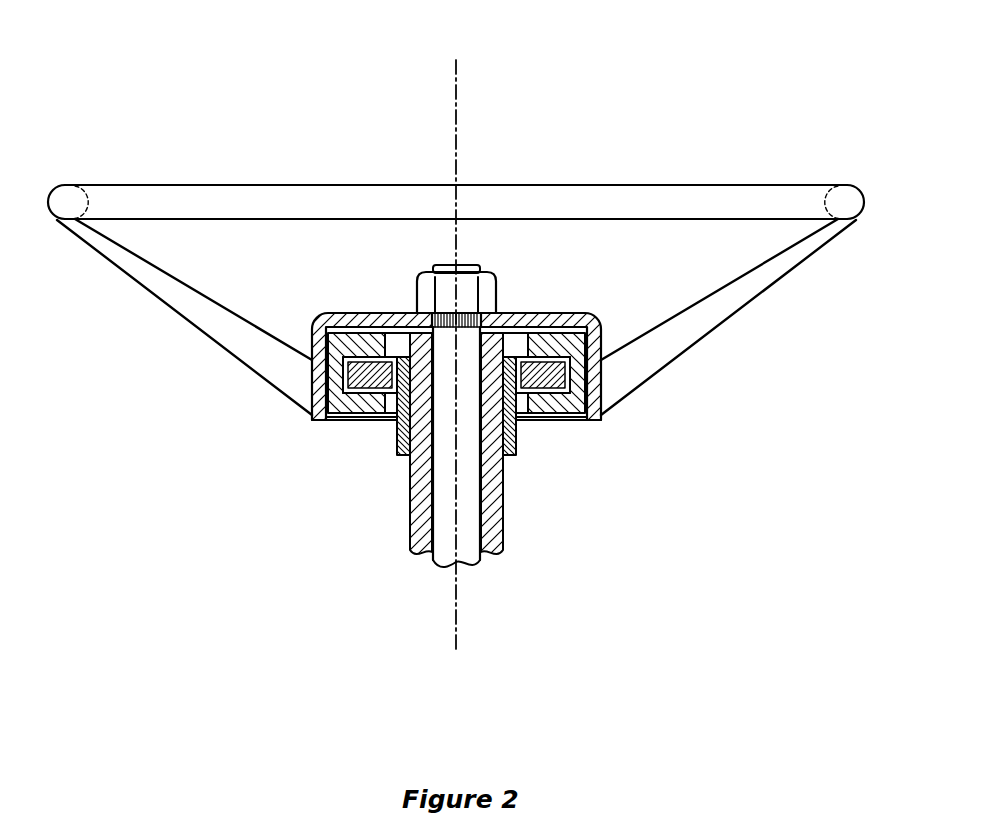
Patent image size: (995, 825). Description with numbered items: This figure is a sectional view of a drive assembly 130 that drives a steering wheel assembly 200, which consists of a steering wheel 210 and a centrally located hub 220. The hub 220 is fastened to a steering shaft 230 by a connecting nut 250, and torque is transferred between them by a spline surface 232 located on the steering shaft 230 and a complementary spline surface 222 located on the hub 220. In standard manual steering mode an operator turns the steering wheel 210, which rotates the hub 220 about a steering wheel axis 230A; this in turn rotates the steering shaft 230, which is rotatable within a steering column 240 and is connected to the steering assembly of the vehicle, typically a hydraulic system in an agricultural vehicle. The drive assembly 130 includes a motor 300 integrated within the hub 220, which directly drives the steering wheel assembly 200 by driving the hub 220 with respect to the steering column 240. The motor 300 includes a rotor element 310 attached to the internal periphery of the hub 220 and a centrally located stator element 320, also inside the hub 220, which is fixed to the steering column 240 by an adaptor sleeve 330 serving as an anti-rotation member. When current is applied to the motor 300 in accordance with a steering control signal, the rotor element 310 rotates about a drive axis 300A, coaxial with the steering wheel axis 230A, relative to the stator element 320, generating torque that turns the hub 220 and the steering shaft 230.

The steering wheel assembly 200 is at (210, 126).
The steering wheel 210 is at (668, 185).
The hub 220 is at (335, 313).
The spline surface 222 is at (448, 312).
The steering shaft 230 is at (440, 494).
The steering wheel axis 230A is at (456, 51).
The spline surface 232 is at (476, 312).
The steering column 240 is at (496, 505).
The connecting nut 250 is at (488, 285).
The motor 300 is at (360, 415).
The drive axis 300A is at (542, 325).
The rotor element 310 is at (338, 405).
The stator element 320 is at (546, 372).
The adaptor sleeve 330 is at (516, 437).
The drive assembly 130 is at (351, 331).